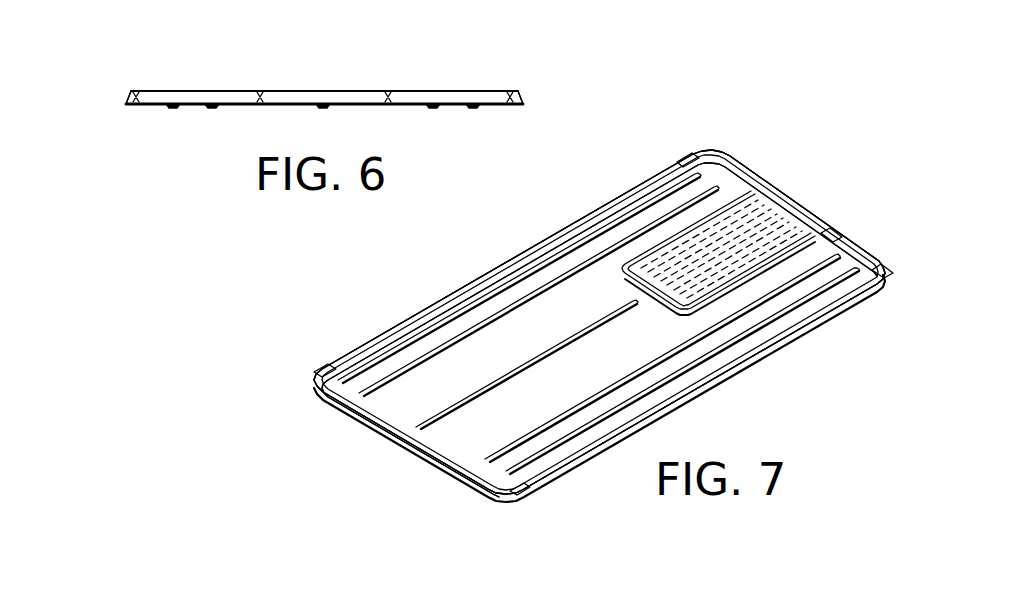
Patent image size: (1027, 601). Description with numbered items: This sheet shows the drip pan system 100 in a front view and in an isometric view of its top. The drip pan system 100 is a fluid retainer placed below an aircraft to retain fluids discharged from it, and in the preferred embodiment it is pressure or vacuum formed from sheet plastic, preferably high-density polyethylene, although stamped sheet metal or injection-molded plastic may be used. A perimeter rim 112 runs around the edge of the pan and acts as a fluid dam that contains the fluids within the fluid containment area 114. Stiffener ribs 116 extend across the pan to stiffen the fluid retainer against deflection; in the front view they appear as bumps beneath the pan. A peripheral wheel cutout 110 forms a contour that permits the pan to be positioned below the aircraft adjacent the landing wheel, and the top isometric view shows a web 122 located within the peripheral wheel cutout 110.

In FIG. 6, the drip pan system 100 is at (180, 79).
In FIG. 7, the drip pan system 100 is at (432, 264).
In FIG. 7, the peripheral wheel cutout 110 is at (733, 240).
In FIG. 6, the perimeter rim 112 is at (130, 92).
In FIG. 7, the perimeter rim 112 is at (572, 224).
In FIG. 7, the fluid containment area 114 is at (502, 419).
In FIG. 6, the stiffener ribs 116 is at (482, 140).
In FIG. 7, the stiffener ribs 116 is at (434, 352).
In FIG. 7, the web 122 is at (760, 212).